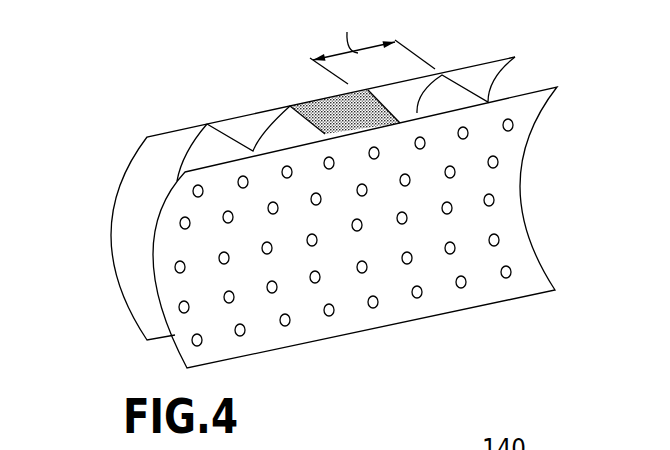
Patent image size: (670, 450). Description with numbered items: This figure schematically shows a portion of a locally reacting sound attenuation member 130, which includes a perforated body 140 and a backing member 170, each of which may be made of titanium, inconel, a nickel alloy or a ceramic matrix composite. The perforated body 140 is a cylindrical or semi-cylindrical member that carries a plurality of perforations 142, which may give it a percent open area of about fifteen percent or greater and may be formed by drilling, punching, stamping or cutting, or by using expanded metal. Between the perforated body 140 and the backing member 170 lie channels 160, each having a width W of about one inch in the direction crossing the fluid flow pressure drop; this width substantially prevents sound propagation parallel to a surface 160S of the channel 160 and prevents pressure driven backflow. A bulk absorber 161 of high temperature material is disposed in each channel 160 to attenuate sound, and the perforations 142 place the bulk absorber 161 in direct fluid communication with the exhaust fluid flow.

The locally reacting sound attenuation member 130 is at (578, 149).
The perforated body 140 is at (535, 257).
The perforations 142 is at (334, 306).
The channels 160 is at (301, 103).
The surface of the channel 160S is at (230, 128).
The bulk absorber 161 is at (299, 107).
The backing member 170 is at (111, 246).